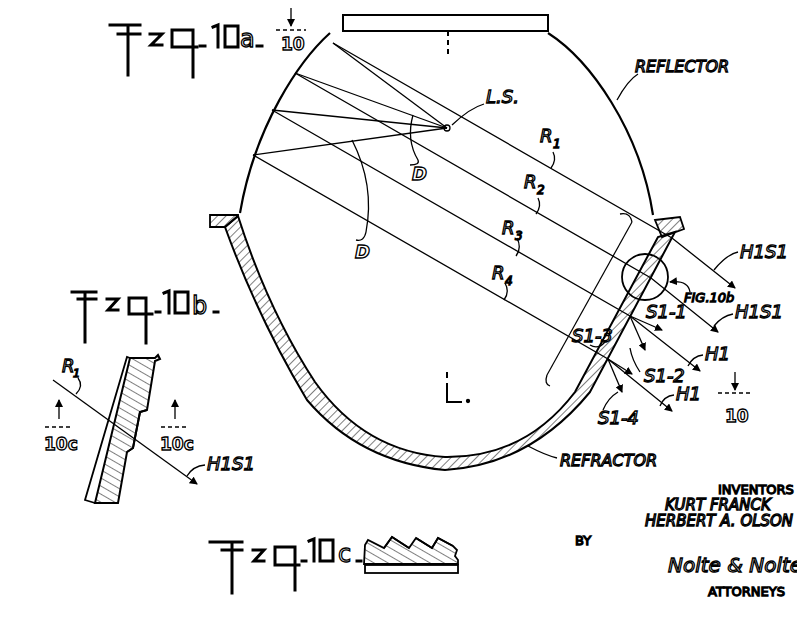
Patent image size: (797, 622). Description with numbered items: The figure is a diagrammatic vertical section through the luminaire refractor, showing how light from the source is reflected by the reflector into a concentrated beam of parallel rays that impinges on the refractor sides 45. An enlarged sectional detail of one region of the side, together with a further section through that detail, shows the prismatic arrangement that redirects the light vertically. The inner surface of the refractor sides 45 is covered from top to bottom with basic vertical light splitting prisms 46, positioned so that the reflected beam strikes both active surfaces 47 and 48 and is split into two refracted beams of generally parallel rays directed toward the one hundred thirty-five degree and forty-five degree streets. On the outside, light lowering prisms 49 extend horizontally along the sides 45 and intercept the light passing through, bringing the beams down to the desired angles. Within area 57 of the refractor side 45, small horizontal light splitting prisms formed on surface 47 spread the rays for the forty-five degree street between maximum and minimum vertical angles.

In FIG. 10A, the refractor sides 45 is at (588, 405).
In FIG. 10A, the area of the refractor side 57 is at (604, 272).
In FIG. 10B, the basic vertical light splitting prisms 46 is at (90, 472).
In FIG. 10C, the basic vertical light splitting prisms 46 is at (409, 528).
In FIG. 10B, the active surface 47 is at (124, 380).
In FIG. 10C, the active surface 47 is at (420, 540).
In FIG. 10C, the active surface 48 is at (436, 542).
In FIG. 10B, the outside light lowering prisms 49 is at (136, 452).
In FIG. 10C, the outside light lowering prisms 49 is at (405, 573).